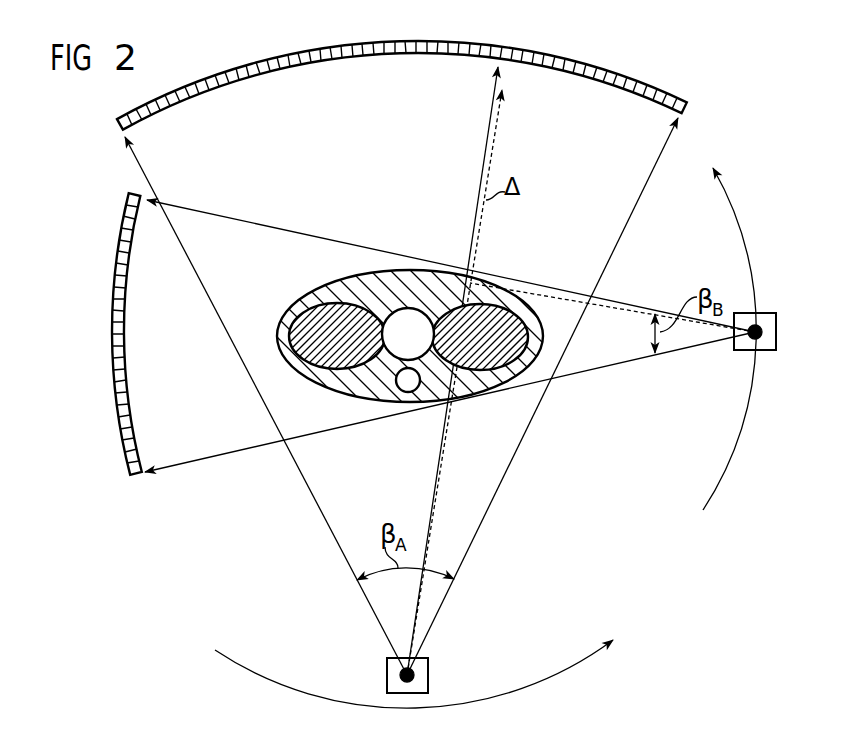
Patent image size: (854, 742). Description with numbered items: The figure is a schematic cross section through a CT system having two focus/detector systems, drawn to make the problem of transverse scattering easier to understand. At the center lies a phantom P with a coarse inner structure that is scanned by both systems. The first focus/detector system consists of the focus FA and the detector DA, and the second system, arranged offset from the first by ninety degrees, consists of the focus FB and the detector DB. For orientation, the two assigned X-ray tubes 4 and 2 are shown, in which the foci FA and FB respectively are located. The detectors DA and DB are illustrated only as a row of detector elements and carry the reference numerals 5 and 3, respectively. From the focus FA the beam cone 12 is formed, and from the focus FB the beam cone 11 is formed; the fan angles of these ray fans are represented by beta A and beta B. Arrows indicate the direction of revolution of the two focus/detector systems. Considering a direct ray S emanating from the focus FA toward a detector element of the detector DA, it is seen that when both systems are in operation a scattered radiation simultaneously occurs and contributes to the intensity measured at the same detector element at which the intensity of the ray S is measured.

The X-ray tube 2 is at (767, 313).
The detector 3 is at (107, 231).
The X-ray tube 4 is at (385, 680).
The detector 5 is at (652, 73).
The beam cone 11 is at (613, 355).
The beam cone 12 is at (387, 615).
The phantom P is at (293, 300).
The direct ray S is at (483, 172).
The detector DA is at (690, 110).
The detector DB is at (132, 478).
The focus FA is at (412, 673).
The focus FB is at (757, 335).